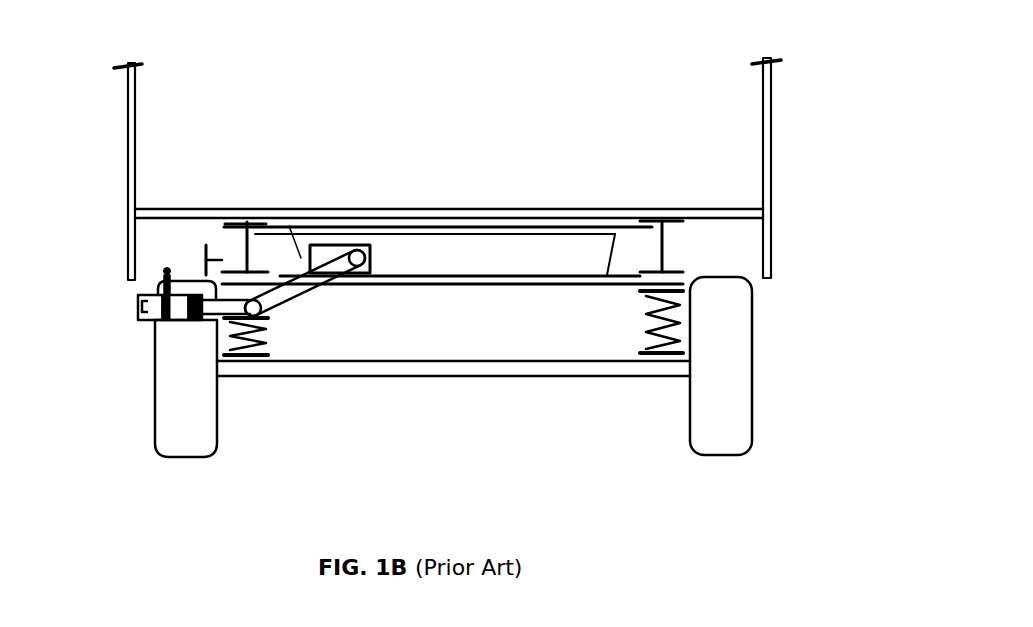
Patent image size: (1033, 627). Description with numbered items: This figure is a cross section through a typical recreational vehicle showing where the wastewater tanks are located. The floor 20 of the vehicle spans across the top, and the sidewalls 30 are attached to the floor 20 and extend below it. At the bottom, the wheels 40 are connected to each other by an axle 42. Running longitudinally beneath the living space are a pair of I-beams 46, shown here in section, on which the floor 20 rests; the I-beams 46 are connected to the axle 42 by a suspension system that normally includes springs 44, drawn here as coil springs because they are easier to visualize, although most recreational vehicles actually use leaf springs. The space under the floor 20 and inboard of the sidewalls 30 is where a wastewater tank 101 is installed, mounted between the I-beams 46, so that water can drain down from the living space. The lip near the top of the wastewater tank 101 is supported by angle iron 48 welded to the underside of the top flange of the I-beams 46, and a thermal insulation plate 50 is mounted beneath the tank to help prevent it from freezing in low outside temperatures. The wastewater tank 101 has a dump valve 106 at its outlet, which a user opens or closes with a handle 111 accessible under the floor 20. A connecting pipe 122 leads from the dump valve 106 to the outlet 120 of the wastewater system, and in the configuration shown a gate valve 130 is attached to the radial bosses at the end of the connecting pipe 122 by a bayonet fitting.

The floor 20 is at (164, 209).
The sidewalls 30 is at (126, 252).
The wheels 40 is at (157, 428).
The axle 42 is at (376, 378).
The springs 44 is at (268, 340).
The I-beams 46 is at (236, 238).
The angle iron 48 is at (633, 221).
The thermal insulation plate 50 is at (617, 283).
The wastewater tank 101 is at (453, 257).
The dump valve 106 is at (338, 244).
The handle 111 is at (205, 259).
The outlet 120 is at (137, 314).
The connecting pipe 122 is at (217, 311).
The gate valve 130 is at (157, 291).